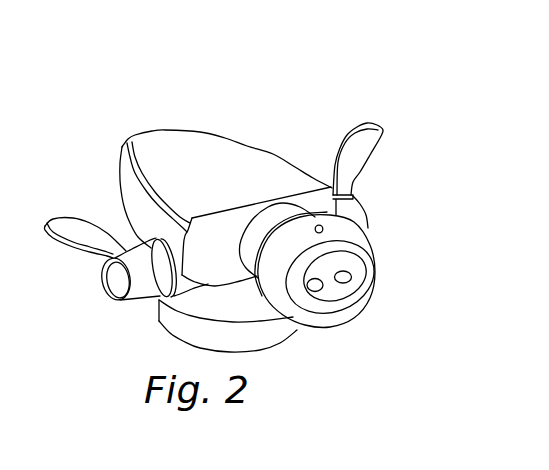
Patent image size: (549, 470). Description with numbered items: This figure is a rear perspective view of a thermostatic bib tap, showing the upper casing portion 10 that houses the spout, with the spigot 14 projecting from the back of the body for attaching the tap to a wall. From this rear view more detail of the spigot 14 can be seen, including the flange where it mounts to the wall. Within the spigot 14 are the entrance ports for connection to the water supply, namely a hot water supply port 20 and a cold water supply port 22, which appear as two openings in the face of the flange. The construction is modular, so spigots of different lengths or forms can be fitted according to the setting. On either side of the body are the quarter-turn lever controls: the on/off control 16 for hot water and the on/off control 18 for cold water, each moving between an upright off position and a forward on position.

The upper casing portion 10 is at (241, 141).
The spigot 14 is at (348, 312).
The on/off control for hot water 16 is at (357, 127).
The on/off control for cold water 18 is at (67, 228).
The hot water supply port 20 is at (346, 280).
The cold water supply port 22 is at (315, 287).